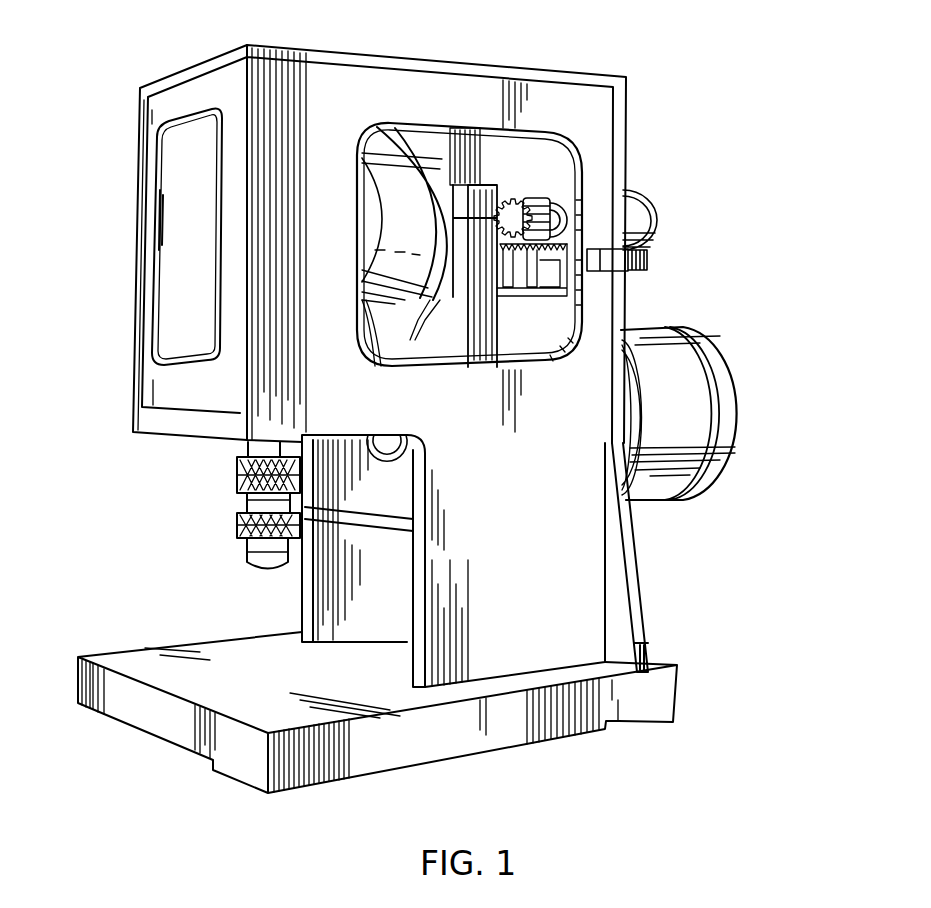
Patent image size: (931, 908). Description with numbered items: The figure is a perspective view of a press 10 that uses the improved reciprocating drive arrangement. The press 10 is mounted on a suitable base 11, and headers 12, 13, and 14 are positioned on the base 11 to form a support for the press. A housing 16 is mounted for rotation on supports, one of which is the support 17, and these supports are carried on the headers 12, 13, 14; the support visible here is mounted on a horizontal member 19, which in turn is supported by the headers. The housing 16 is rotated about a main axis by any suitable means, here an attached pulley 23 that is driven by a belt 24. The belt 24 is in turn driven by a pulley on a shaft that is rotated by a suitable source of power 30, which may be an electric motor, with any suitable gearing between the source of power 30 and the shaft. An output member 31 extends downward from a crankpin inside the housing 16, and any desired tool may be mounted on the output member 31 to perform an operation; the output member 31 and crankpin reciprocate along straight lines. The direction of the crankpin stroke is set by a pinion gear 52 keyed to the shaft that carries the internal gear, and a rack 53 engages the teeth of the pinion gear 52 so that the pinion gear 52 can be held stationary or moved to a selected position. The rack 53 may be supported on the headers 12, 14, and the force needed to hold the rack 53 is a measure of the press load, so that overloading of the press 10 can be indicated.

The press 10 is at (118, 222).
The base 11 is at (187, 740).
The header 12 is at (536, 633).
The header 13 is at (620, 600).
The header 14 is at (320, 600).
The housing 16 is at (392, 157).
The support 17 is at (490, 190).
The horizontal member 19 is at (172, 432).
The pulley 23 is at (433, 163).
The belt 24 is at (418, 313).
The source of power 30 is at (737, 452).
The output member 31 is at (248, 547).
The pinion gear 52 is at (533, 202).
The rack 53 is at (648, 263).